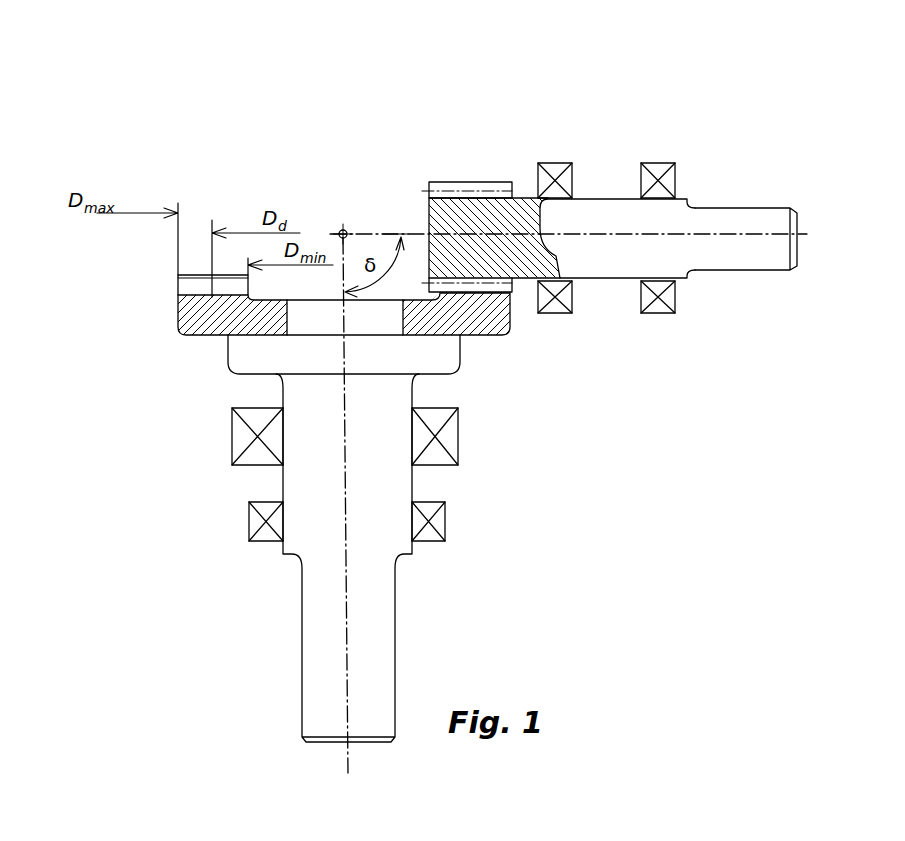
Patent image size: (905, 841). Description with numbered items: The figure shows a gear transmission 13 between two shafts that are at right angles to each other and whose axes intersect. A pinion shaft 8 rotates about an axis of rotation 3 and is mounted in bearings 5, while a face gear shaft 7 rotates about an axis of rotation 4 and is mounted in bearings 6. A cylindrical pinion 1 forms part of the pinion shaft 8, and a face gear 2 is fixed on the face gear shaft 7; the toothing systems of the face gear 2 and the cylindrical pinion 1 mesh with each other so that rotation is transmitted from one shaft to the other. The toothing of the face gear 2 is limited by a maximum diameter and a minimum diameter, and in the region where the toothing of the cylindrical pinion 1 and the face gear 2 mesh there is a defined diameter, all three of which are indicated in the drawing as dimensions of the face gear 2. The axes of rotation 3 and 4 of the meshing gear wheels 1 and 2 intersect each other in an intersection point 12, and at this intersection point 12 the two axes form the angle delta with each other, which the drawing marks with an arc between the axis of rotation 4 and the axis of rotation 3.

The cylindrical pinion 1 is at (473, 187).
The face gear 2 is at (236, 307).
The axis of rotation 3 is at (748, 240).
The axis of rotation 4 is at (347, 650).
The bearings 5 is at (657, 175).
The bearings 6 is at (247, 523).
The face gear shaft 7 is at (282, 350).
The pinion shaft 8 is at (717, 222).
The intersection point 12 is at (341, 229).
The gear transmission 13 is at (366, 130).